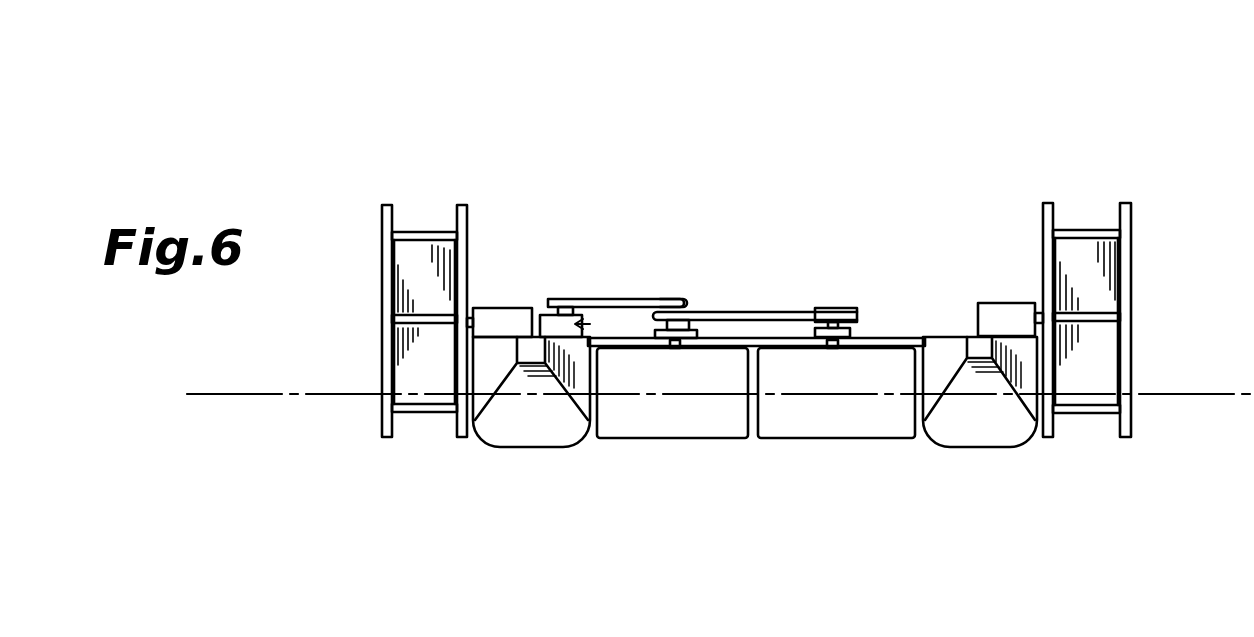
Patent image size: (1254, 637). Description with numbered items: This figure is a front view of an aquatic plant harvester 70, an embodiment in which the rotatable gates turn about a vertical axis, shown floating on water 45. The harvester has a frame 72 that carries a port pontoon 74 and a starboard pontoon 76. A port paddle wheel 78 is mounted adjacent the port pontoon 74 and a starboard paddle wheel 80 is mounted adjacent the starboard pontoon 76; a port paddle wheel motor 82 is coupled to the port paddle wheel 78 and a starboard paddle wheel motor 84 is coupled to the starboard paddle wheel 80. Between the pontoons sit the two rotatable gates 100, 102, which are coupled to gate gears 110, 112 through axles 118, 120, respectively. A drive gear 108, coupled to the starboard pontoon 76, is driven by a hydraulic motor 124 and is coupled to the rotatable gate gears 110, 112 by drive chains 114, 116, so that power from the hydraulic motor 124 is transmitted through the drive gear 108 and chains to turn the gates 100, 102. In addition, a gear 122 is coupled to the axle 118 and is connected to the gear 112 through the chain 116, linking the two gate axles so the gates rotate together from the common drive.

The water 45 is at (273, 394).
The aquatic plant harvester 70 is at (1037, 122).
The frame 72 is at (893, 328).
The port pontoon 74 is at (990, 420).
The starboard pontoon 76 is at (519, 433).
The port paddle wheel 78 is at (1133, 233).
The starboard paddle wheel 80 is at (382, 221).
The port paddle wheel motor 82 is at (993, 305).
The starboard paddle wheel motor 84 is at (495, 306).
The rotatable gate 100 is at (678, 428).
The rotatable gate 102 is at (838, 430).
The drive gear 108 is at (560, 297).
The rotatable gate gear 110 is at (668, 297).
The rotatable gate gear 112 is at (836, 308).
The drive chain 114 is at (622, 297).
The drive chain 116 is at (754, 312).
The axle 118 is at (672, 350).
The axle 120 is at (832, 350).
The gear 122 is at (694, 322).
The hydraulic motor 124 is at (609, 324).